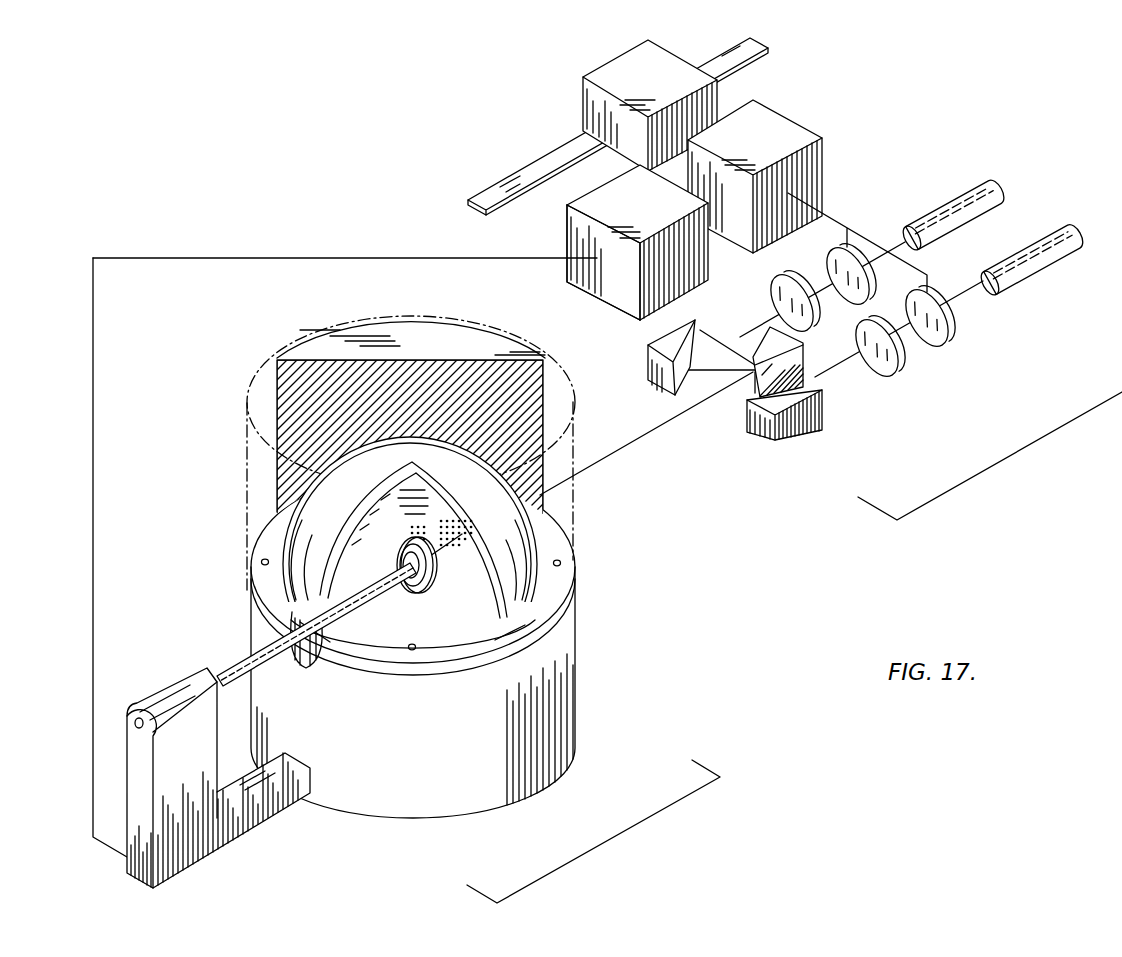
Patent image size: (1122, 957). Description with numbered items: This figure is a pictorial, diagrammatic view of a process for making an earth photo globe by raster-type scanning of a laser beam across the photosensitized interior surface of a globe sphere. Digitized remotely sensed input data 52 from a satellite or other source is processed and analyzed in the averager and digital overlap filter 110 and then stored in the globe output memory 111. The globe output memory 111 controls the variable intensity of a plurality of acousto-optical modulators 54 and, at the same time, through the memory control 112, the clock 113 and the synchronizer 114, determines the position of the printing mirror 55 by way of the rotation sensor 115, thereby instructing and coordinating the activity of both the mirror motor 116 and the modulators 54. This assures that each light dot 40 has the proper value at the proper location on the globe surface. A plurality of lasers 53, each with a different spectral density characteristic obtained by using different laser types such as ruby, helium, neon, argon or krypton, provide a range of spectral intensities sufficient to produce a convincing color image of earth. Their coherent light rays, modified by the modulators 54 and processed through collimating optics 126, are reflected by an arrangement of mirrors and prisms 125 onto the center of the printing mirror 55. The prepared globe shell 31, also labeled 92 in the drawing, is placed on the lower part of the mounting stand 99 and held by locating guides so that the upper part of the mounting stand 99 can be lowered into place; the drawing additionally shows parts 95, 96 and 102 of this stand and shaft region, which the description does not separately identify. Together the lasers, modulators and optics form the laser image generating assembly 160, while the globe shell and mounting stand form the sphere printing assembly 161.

The averager and digital overlap filter 110 is at (607, 63).
The globe output memory 111 is at (768, 107).
The memory control 112 is at (603, 301).
The clock 113 is at (603, 301).
The synchronizer 114 is at (603, 311).
The input data 52 is at (527, 162).
The lasers 53 is at (928, 212).
The acousto-optical modulators 54 is at (870, 273).
The collimating optics 126 is at (797, 275).
The mirrors and prisms 125 is at (760, 333).
The mounting stand 99 is at (283, 347).
The globe shell 31 is at (481, 564).
The sphere 92 is at (498, 525).
The light dot 40 is at (436, 527).
The rotation sensor 115 is at (397, 558).
The printing mirror 55 is at (411, 573).
The flange hole 96 is at (562, 562).
The flange 95 is at (546, 597).
The shaft 102 is at (228, 667).
The mirror motor 116 is at (155, 692).
The laser image generating assembly 160 is at (990, 456).
The sphere printing assembly 161 is at (593, 831).